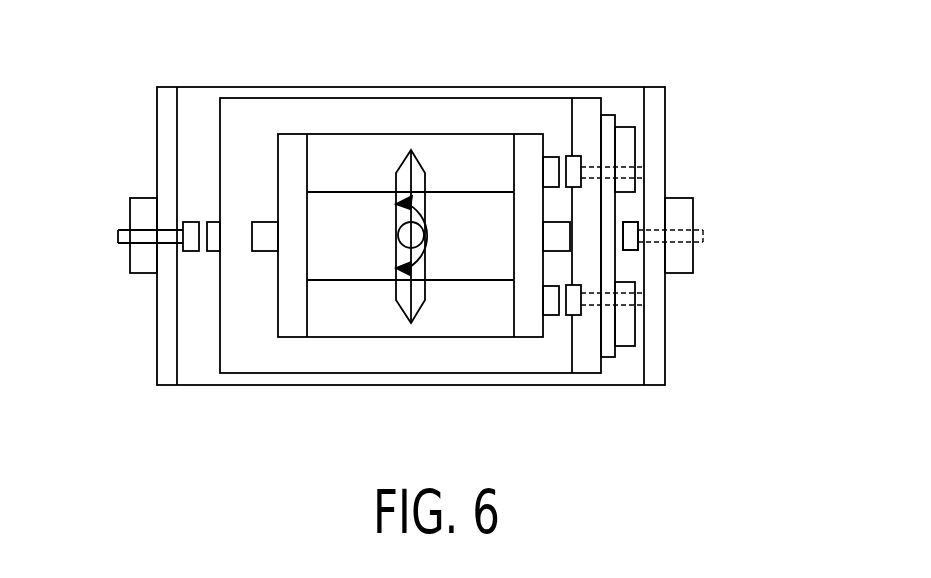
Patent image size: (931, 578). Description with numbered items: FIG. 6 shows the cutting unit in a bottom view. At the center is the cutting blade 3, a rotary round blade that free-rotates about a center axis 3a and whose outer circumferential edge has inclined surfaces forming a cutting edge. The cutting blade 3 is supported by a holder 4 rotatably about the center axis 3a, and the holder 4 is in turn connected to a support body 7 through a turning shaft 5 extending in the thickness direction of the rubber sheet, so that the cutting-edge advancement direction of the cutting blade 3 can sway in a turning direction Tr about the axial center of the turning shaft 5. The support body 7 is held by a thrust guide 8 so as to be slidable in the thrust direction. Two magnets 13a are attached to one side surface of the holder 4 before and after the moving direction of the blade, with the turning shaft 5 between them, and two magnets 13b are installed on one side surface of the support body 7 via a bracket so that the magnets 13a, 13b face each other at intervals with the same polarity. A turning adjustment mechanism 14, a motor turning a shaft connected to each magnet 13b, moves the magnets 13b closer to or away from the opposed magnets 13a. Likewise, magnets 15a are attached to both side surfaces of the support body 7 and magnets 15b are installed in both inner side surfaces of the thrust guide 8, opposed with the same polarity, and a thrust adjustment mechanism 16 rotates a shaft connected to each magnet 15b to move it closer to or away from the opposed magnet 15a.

The cutting blade 3 is at (418, 302).
The center axis 3a is at (265, 230).
The holder 4 is at (355, 324).
The turning shaft 5 is at (395, 230).
The support body 7 is at (315, 110).
The thrust guide 8 is at (204, 108).
The magnets 13a is at (552, 157).
The magnets 13b is at (577, 156).
The turning adjustment mechanism 14 is at (630, 152).
The magnets 15a is at (215, 252).
The magnets 15b is at (178, 255).
The thrust adjustment mechanism 16 is at (142, 205).
The turning direction Tr is at (432, 235).